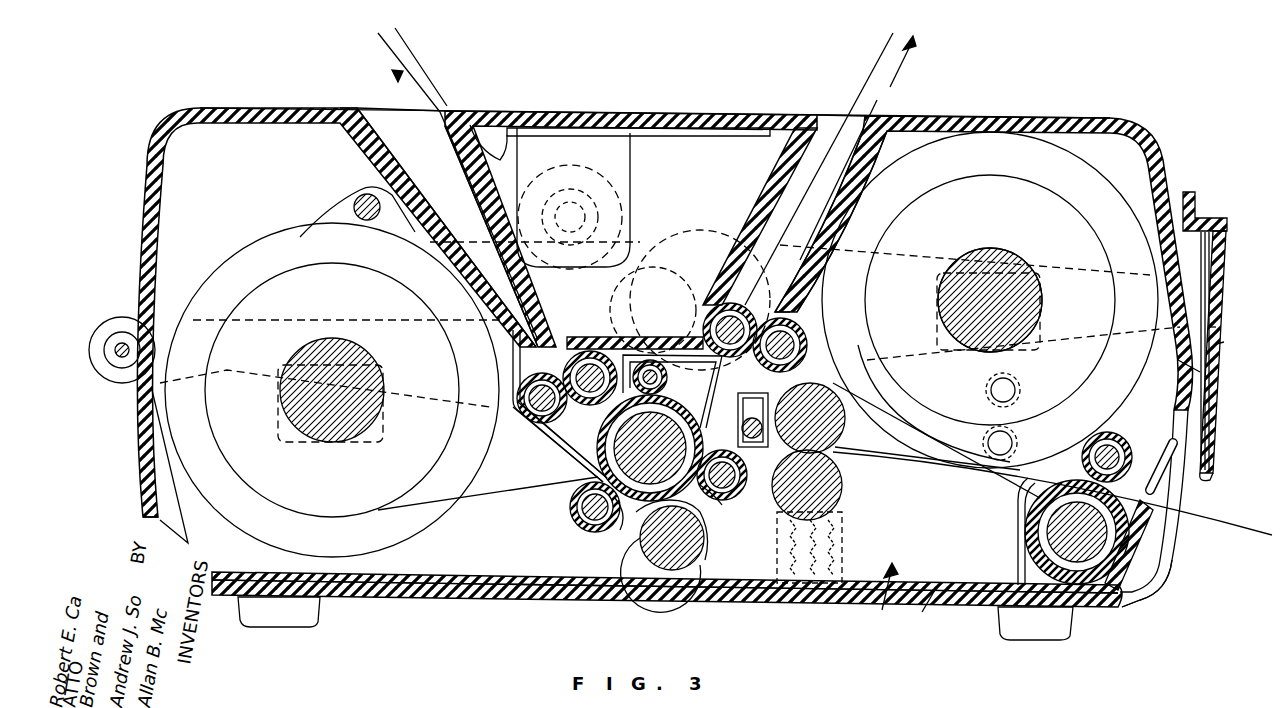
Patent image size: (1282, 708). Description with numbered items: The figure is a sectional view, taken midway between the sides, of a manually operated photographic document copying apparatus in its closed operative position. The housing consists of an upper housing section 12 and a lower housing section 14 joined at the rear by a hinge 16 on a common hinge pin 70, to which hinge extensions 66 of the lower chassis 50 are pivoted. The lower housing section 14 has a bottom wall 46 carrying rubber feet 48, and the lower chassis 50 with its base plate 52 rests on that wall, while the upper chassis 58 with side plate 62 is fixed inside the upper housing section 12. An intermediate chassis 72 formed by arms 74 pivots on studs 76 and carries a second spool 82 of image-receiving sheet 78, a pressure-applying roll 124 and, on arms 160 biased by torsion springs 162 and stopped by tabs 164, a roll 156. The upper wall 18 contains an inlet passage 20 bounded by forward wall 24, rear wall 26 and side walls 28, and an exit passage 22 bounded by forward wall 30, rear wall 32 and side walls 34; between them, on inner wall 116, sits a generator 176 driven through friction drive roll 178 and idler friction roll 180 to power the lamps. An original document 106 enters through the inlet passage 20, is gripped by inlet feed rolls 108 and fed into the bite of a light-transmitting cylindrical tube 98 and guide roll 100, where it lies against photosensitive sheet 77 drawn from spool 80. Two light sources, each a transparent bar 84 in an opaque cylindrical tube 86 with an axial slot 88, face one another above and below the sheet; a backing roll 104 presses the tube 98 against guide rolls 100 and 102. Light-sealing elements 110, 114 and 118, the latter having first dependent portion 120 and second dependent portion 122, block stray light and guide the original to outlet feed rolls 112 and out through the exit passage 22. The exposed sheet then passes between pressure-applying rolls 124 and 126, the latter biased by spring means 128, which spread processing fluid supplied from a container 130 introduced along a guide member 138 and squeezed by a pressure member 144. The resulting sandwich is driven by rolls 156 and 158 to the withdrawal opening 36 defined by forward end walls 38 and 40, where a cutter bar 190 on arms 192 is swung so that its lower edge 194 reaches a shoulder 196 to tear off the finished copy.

The upper housing section 12 is at (1066, 118).
The lower housing section 14 is at (490, 592).
The hinge 16 is at (95, 335).
The upper wall 18 is at (530, 112).
The inlet passage 20 is at (375, 118).
The exit passage 22 is at (838, 128).
The forward wall 24 is at (470, 125).
The rear wall 26 is at (360, 152).
The side walls 28 is at (470, 226).
The forward wall 30 is at (872, 130).
The rear wall 32 is at (808, 125).
The side walls 34 is at (838, 180).
The withdrawal opening 36 is at (1152, 498).
The forward end wall 38 is at (1148, 538).
The forward end wall 40 is at (1170, 190).
The bottom wall 46 is at (445, 590).
The feet 48 is at (303, 612).
The lower chassis 50 is at (880, 599).
The base plate 52 is at (920, 613).
The upper chassis 58 is at (333, 213).
The side plate 62 is at (377, 212).
The hinge extensions 66 is at (110, 367).
The hinge pin 70 is at (122, 343).
The intermediate chassis 72 is at (1218, 327).
The arms 74 is at (925, 285).
The studs 76 is at (1226, 344).
The photosensitive sheet 77 is at (430, 505).
The image-receiving sheet 78 is at (897, 407).
The spool 80 is at (218, 250).
The second spool 82 is at (995, 145).
The bar 84 is at (585, 472).
The cylindrical tube 86 is at (560, 460).
The axial slot 88 is at (640, 520).
The cylindrical tube 98 is at (608, 523).
The guide roll 100 is at (578, 525).
The guide roll 102 is at (728, 507).
The backing roll 104 is at (660, 337).
The original document 106 is at (405, 48).
The inlet feed rolls 108 is at (520, 440).
The light-sealing element 110 is at (525, 375).
The outlet feed rolls 112 is at (738, 290).
The light-sealing element 114 is at (798, 315).
The inner wall 116 is at (635, 300).
The light-sealing element 118 is at (665, 370).
The first dependent portion 120 is at (590, 350).
The second dependent portion 122 is at (690, 447).
The pressure-applying roll 124 is at (845, 427).
The pressure-applying roll 126 is at (842, 492).
The spring means 128 is at (842, 560).
The container 130 is at (755, 447).
The guide member 138 is at (735, 497).
The pressure member 144 is at (735, 385).
The roll 156 is at (1022, 493).
The roll 158 is at (1130, 545).
The arms 160 is at (1095, 435).
The torsion springs 162 is at (1203, 370).
The tabs 164 is at (1010, 477).
The generator 176 is at (620, 196).
The friction drive roll 178 is at (570, 217).
The idler friction roll 180 is at (637, 257).
The cutter bar 190 is at (1222, 310).
The arms 192 is at (1068, 262).
The lower edge 194 is at (1212, 479).
The shoulder 196 is at (1138, 598).